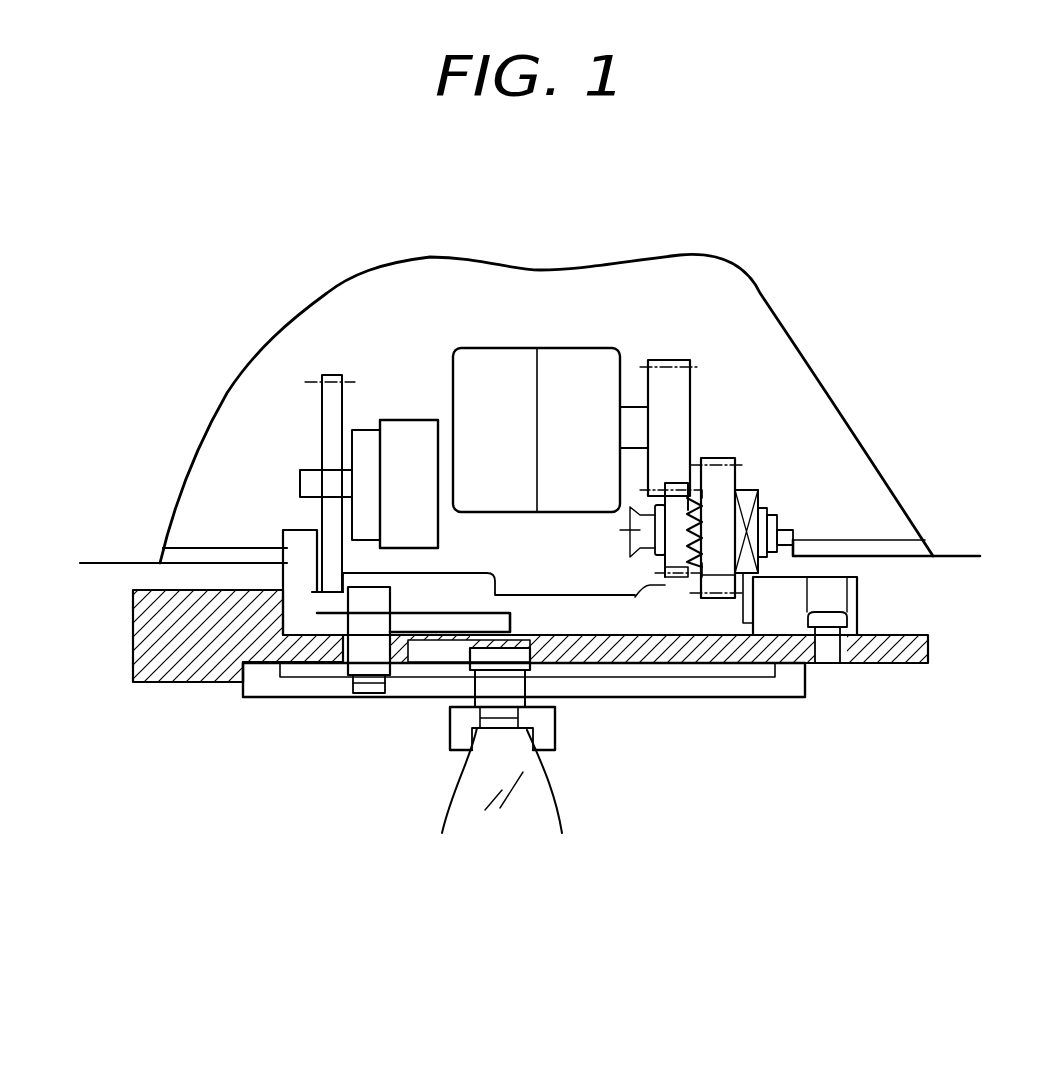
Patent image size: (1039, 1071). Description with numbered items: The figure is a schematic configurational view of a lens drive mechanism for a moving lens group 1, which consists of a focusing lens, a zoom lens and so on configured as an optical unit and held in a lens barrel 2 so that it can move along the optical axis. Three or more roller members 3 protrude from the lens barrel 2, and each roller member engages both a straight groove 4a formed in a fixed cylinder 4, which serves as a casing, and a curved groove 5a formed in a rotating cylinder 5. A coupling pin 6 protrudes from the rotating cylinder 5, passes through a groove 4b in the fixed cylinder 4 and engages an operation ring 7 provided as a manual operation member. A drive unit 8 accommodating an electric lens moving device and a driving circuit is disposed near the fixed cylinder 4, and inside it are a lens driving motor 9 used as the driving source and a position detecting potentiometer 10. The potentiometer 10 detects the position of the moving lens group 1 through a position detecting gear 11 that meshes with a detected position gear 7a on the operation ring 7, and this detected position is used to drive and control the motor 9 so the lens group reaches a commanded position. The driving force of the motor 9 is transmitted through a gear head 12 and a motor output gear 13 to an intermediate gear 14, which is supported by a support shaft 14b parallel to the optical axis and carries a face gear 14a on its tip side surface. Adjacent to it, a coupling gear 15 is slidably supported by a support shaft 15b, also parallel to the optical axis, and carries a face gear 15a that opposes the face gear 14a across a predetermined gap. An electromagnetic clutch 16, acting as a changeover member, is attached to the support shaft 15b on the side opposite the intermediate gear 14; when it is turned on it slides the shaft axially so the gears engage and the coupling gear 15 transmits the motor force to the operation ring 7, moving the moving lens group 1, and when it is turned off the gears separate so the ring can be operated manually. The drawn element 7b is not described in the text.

The moving lens group 1 is at (520, 815).
The lens barrel 2 is at (440, 828).
The roller members 3 is at (462, 692).
The fixed cylinder 4 is at (152, 683).
The straight groove 4a is at (440, 660).
The groove 4b is at (327, 663).
The rotating cylinder 5 is at (245, 690).
The curved groove 5a is at (556, 700).
The coupling pin 6 is at (367, 663).
The operation ring 7 is at (307, 603).
The detected position gear 7a is at (430, 587).
The bracket end block 7b is at (823, 663).
The drive unit 8 is at (256, 435).
The lens driving motor 9 is at (500, 355).
The position detecting potentiometer 10 is at (425, 418).
The position detecting gear 11 is at (340, 375).
The gear head 12 is at (592, 355).
The motor output gear 13 is at (680, 360).
The intermediate gear 14 is at (676, 558).
The face gear 14a is at (693, 560).
The support shaft 14b is at (660, 545).
The coupling gear 15 is at (738, 472).
The face gear 15a is at (701, 572).
The support shaft 15b is at (795, 540).
The electromagnetic clutch 16 is at (760, 500).